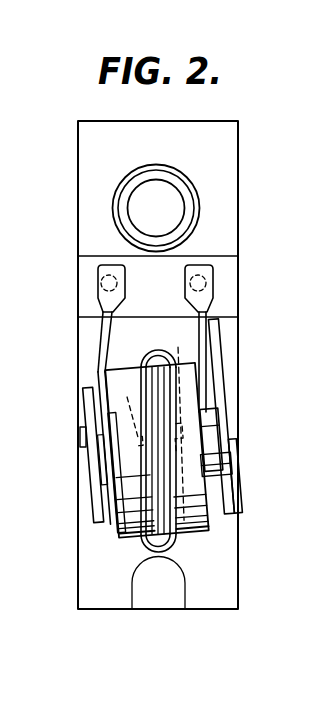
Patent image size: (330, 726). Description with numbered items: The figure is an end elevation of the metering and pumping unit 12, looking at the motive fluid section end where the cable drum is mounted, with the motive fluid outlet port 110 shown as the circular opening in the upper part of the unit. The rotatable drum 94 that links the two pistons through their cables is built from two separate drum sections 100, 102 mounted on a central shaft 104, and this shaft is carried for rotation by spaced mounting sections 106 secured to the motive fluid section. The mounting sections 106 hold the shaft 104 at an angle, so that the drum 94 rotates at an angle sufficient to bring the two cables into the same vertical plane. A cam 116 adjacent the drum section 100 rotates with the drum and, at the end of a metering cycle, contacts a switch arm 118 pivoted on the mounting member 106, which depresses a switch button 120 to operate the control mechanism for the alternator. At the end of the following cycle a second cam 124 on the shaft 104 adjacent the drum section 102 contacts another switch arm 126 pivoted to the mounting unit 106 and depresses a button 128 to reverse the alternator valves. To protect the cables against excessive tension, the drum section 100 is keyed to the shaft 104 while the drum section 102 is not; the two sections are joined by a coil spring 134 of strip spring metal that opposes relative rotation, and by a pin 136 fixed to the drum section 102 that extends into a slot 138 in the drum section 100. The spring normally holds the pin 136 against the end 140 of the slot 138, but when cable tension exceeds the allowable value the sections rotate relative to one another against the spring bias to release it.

The metering and pumping unit 12 is at (266, 164).
The motive fluid outlet port 110 is at (184, 201).
The switch button 120 is at (204, 282).
The button 128 is at (100, 283).
The switch arm 126 is at (98, 332).
The end of the slot 140 is at (180, 358).
The coil spring 134 is at (177, 530).
The pin 136 is at (150, 436).
The switch arm 118 is at (212, 372).
The cam 116 is at (220, 414).
The slot 138 is at (196, 464).
The mounting sections 106 is at (93, 520).
The central shaft 104 is at (80, 437).
The cam 124 is at (107, 440).
The drum section 100 is at (207, 530).
The drum section 102 is at (135, 533).
The rotatable drum 94 is at (185, 535).